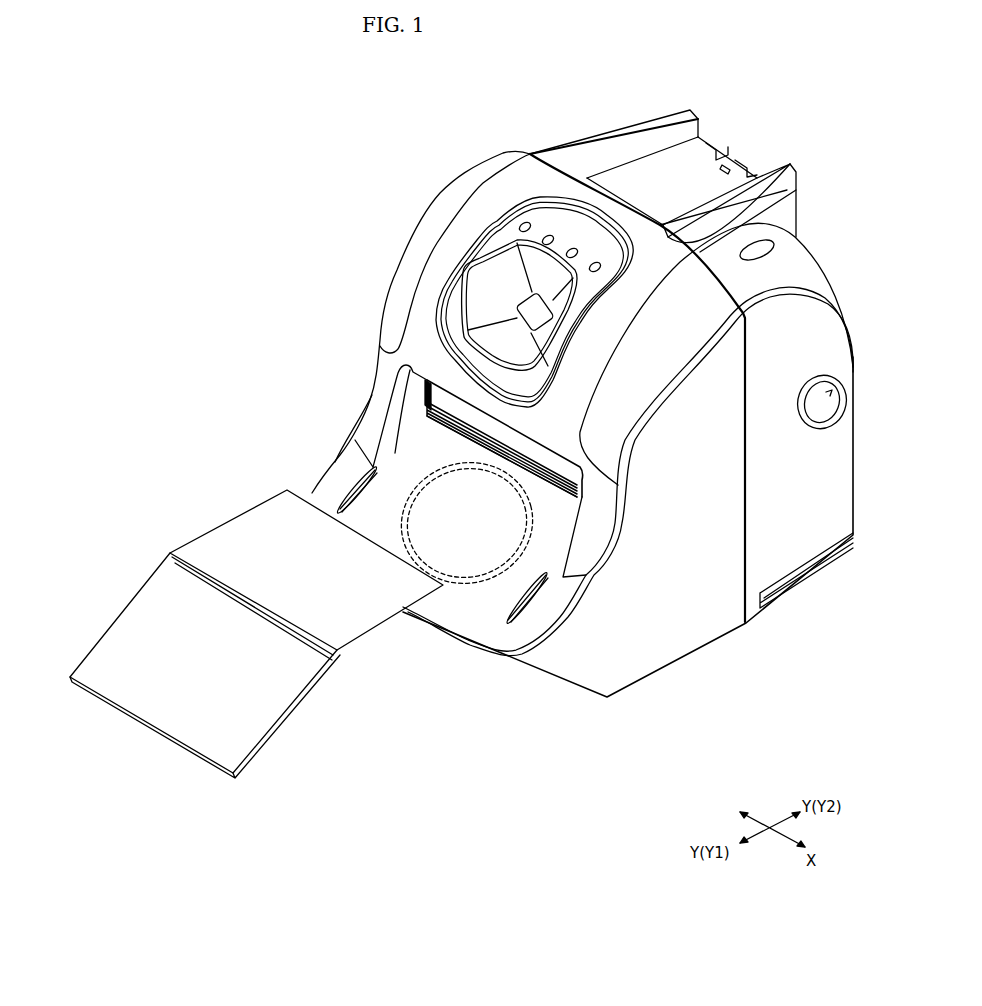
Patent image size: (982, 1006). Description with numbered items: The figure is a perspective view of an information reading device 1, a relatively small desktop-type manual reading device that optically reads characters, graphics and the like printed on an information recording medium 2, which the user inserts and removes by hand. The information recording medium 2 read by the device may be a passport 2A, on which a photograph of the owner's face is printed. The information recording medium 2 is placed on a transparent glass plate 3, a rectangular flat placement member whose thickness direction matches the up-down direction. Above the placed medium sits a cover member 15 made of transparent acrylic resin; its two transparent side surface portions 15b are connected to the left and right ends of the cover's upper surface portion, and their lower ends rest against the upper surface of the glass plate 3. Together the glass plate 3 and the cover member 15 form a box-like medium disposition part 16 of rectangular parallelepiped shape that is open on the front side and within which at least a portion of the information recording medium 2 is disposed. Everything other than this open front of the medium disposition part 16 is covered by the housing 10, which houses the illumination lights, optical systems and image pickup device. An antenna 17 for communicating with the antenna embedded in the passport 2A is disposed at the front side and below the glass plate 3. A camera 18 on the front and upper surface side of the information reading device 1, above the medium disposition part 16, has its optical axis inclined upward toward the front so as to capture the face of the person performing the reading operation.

The information reading device 1 is at (823, 58).
The housing 10 is at (520, 152).
The camera 18 is at (522, 311).
The cover member 15 is at (425, 390).
The side surface portion 15b is at (501, 438).
The glass plate 3 is at (440, 420).
The medium disposition part 16 is at (564, 468).
The antenna 17 is at (479, 590).
The information recording medium 2 is at (232, 780).
The passport 2A is at (205, 665).